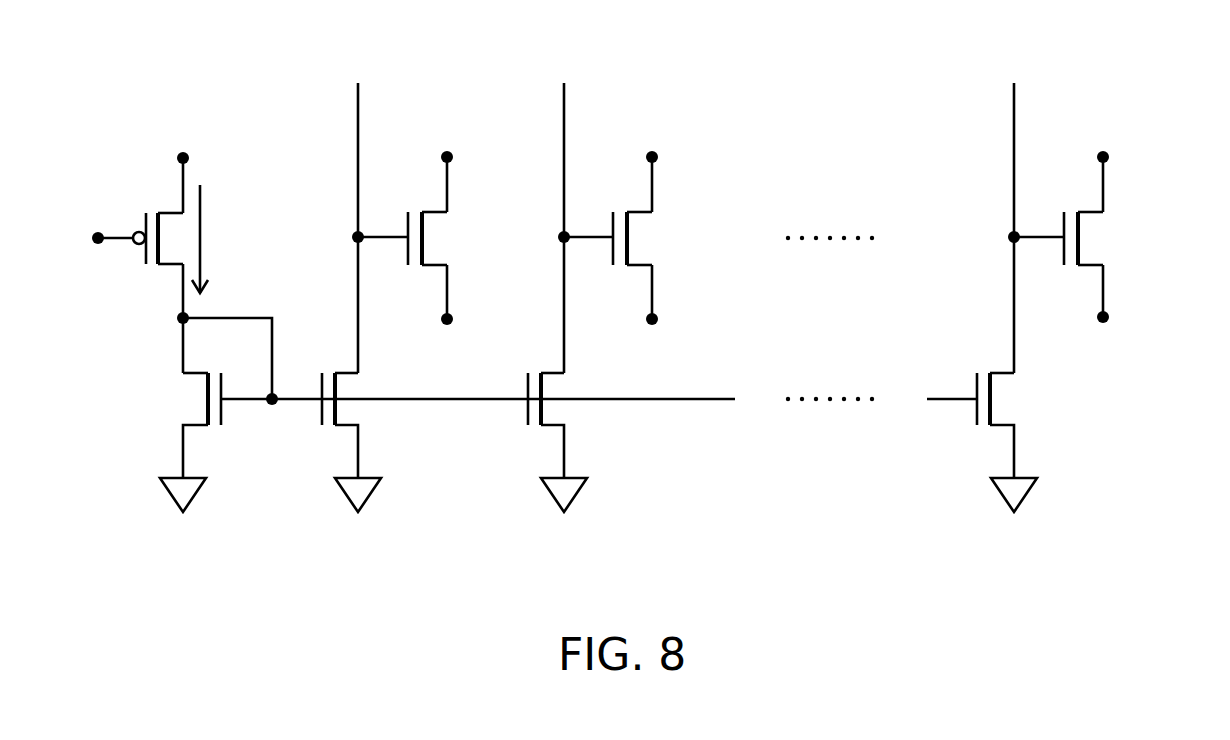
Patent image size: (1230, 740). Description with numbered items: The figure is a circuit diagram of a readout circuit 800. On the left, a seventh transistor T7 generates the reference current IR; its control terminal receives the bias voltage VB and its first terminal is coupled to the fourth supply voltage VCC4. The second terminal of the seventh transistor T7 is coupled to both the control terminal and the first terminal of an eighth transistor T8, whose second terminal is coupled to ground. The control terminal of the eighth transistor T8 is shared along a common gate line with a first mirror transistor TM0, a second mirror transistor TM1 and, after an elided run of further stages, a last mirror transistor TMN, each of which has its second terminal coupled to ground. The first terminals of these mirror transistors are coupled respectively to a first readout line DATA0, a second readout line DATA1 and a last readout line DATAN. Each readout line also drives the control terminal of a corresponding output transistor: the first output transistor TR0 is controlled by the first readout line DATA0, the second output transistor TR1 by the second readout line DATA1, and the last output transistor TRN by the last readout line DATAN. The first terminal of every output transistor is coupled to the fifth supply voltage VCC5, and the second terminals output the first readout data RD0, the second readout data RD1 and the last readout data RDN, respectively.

The readout circuit 800 is at (903, 592).
The fourth supply voltage VCC4 is at (184, 163).
The bias voltage VB is at (88, 236).
The reference current IR is at (214, 239).
The seventh transistor T7 is at (142, 255).
The eighth transistor T8 is at (192, 399).
The first mirror transistor TM0 is at (315, 415).
The second mirror transistor TM1 is at (520, 415).
The (N+1)-th mirror transistor TMN is at (973, 415).
The first readout line DATA0 is at (355, 208).
The second readout line DATA1 is at (560, 208).
The (N+1)-th readout line DATAN is at (1010, 208).
The fifth supply voltage VCC5 is at (773, 162).
The first output transistor TR0 is at (438, 238).
The second output transistor TR1 is at (645, 238).
The (N+1)-th output transistor TRN is at (1095, 238).
The first readout data RD0 is at (448, 314).
The second readout data RD1 is at (653, 314).
The (N+1)-th readout data RDN is at (1101, 314).